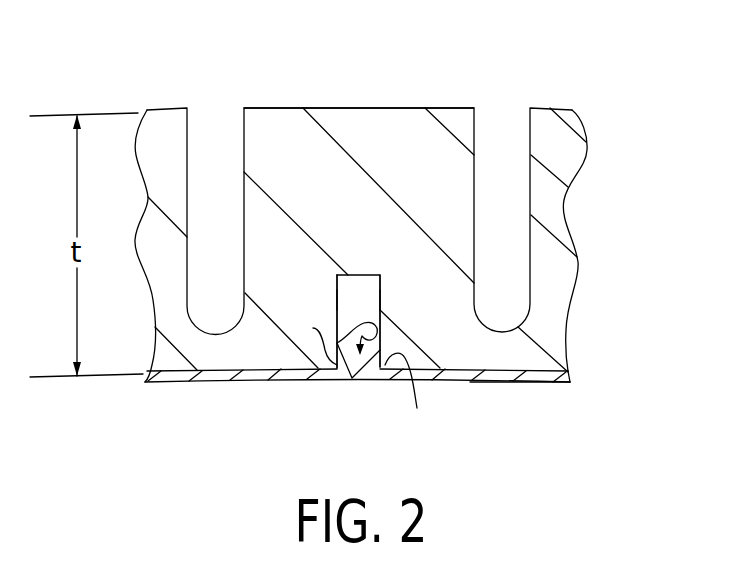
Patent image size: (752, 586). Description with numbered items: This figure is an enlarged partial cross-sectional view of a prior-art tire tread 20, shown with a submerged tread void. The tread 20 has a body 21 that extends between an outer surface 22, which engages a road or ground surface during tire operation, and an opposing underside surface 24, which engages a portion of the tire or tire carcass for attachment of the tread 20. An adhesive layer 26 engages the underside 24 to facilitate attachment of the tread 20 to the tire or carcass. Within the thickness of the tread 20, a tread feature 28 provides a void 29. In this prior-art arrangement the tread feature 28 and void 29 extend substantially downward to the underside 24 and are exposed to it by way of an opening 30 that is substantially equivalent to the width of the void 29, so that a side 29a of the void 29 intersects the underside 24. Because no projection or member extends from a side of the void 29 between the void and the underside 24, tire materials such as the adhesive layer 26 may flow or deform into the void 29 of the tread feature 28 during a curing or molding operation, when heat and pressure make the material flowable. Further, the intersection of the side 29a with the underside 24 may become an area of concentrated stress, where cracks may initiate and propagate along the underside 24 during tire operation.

The tread 20 is at (424, 238).
The body 21 is at (568, 280).
The outer surface 22 is at (410, 108).
The underside surface 24 is at (495, 375).
The adhesive layer 26 is at (560, 383).
The tread feature 28 is at (367, 275).
The void 29 is at (353, 287).
The side of void 29a is at (334, 300).
The opening 30 is at (382, 322).